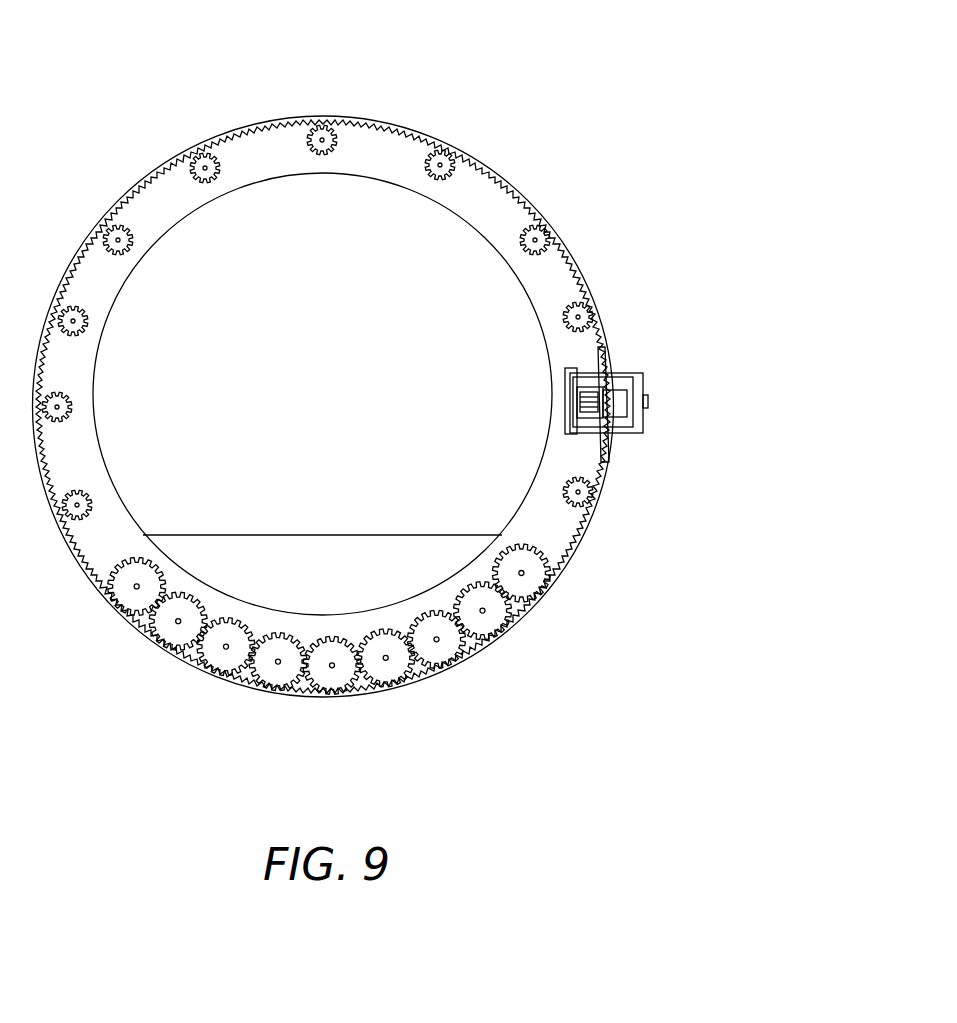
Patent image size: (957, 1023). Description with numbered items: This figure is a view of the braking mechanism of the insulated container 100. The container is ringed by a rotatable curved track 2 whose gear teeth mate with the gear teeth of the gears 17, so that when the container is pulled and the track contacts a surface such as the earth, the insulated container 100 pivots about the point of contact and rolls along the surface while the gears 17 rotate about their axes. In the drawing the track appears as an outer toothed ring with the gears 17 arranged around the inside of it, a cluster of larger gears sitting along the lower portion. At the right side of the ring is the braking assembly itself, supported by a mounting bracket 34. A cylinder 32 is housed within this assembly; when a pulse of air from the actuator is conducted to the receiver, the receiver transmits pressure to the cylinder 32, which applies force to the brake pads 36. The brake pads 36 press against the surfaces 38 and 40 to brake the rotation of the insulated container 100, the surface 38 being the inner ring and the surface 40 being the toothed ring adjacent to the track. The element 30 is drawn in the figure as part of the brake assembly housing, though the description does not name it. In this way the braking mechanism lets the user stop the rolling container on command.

The insulated container 100 is at (522, 96).
The rotatable curved track 2 is at (528, 622).
The surface 40 is at (603, 322).
The surface 38 is at (541, 297).
The gears 17 is at (536, 565).
The motor 30 is at (650, 402).
The cylinder 32 is at (590, 392).
The mounting bracket 34 is at (567, 377).
The brake pads 36 is at (606, 364).